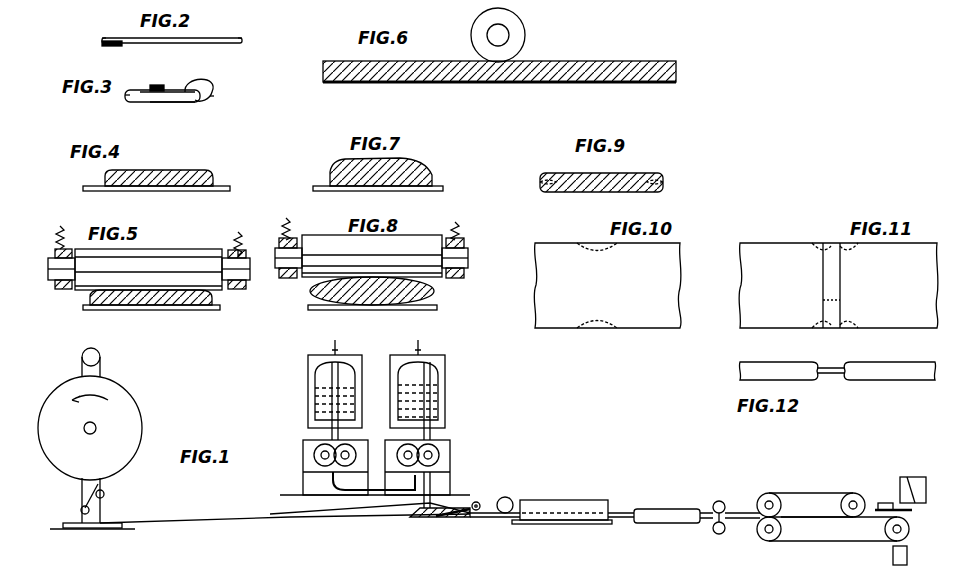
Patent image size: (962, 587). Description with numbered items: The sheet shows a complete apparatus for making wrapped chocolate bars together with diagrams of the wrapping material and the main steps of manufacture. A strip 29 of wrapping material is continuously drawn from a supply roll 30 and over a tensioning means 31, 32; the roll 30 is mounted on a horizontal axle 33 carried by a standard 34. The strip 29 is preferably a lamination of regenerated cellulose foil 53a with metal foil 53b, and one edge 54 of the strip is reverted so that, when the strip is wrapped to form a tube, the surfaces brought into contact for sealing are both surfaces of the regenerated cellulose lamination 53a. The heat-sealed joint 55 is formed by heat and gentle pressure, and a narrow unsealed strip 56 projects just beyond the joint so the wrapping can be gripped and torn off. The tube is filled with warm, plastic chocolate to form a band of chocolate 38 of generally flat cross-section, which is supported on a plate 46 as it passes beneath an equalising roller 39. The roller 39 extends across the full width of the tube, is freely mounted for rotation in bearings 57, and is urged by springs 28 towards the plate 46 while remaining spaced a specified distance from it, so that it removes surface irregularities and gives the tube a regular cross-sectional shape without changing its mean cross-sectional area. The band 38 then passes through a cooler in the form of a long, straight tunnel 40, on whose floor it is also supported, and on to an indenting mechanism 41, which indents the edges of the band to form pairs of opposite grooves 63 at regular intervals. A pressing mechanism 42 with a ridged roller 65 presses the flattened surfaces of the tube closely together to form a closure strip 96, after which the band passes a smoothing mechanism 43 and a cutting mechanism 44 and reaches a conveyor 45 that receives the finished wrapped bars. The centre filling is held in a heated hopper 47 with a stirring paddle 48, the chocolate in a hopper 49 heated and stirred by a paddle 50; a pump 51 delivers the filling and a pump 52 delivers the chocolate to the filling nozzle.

In FIG. 5, the springs 28 is at (60, 226).
In FIG. 8, the springs 28 is at (286, 220).
In FIG. 2, the strip of wrapping material 29 is at (222, 38).
In FIG. 3, the strip of wrapping material 29 is at (214, 90).
In FIG. 1, the strip of wrapping material 29 is at (200, 517).
In FIG. 1, the supply roll 30 is at (143, 424).
In FIG. 1, the tensioning means 31 is at (104, 494).
In FIG. 1, the tensioning means 32 is at (81, 510).
In FIG. 1, the horizontal axle 33 is at (97, 426).
In FIG. 1, the standard 34 is at (101, 362).
In FIG. 6, the band of chocolate 38 is at (602, 61).
In FIG. 4, the band of chocolate 38 is at (195, 170).
In FIG. 7, the band of chocolate 38 is at (428, 166).
In FIG. 9, the band of chocolate 38 is at (645, 173).
In FIG. 5, the band of chocolate 38 is at (150, 305).
In FIG. 8, the band of chocolate 38 is at (382, 309).
In FIG. 10, the band of chocolate 38 is at (742, 252).
In FIG. 11, the band of chocolate 38 is at (838, 285).
In FIG. 12, the band of chocolate 38 is at (898, 362).
In FIG. 1, the band of chocolate 38 is at (520, 505).
In FIG. 6, the equalising roller 39 is at (526, 40).
In FIG. 5, the equalising roller 39 is at (195, 249).
In FIG. 8, the equalising roller 39 is at (371, 256).
In FIG. 1, the equalising roller 39 is at (506, 497).
In FIG. 1, the tunnel cooler 40 is at (573, 503).
In FIG. 1, the indenting mechanism 41 is at (657, 510).
In FIG. 1, the pressing mechanism 42 is at (724, 502).
In FIG. 1, the smoothing mechanism 43 is at (812, 492).
In FIG. 1, the cutting mechanism 44 is at (880, 503).
In FIG. 1, the conveyor 45 is at (907, 548).
In FIG. 6, the plate 46 is at (537, 83).
In FIG. 4, the plate 46 is at (220, 186).
In FIG. 7, the plate 46 is at (445, 188).
In FIG. 5, the plate 46 is at (200, 310).
In FIG. 8, the plate 46 is at (434, 310).
In FIG. 1, the plate 46 is at (512, 524).
In FIG. 1, the hopper 47 is at (446, 392).
In FIG. 1, the stirring paddle 48 is at (438, 365).
In FIG. 1, the hopper 49 is at (308, 366).
In FIG. 1, the paddle 50 is at (345, 365).
In FIG. 1, the pump 51 is at (440, 450).
In FIG. 1, the pump 52 is at (310, 450).
In FIG. 2, the regenerated cellulose foil 53a is at (112, 38).
In FIG. 3, the regenerated cellulose foil 53a is at (132, 102).
In FIG. 2, the metal foil 53b is at (242, 42).
In FIG. 3, the metal foil 53b is at (214, 98).
In FIG. 2, the reverted edge 54 is at (102, 44).
In FIG. 3, the reverted edge 54 is at (178, 102).
In FIG. 3, the heat-sealed joint 55 is at (166, 90).
In FIG. 1, the heat-sealed joint 55 is at (418, 517).
In FIG. 3, the unsealed strip 56 is at (156, 85).
In FIG. 1, the unsealed strip 56 is at (452, 516).
In FIG. 5, the bearings 57 is at (61, 289).
In FIG. 8, the bearings 57 is at (281, 279).
In FIG. 1, the bearings 57 is at (477, 502).
In FIG. 9, the grooves 63 is at (540, 182).
In FIG. 10, the grooves 63 is at (592, 245).
In FIG. 11, the grooves 63 is at (822, 245).
In FIG. 12, the grooves 63 is at (846, 366).
In FIG. 11, the roller 65 is at (822, 328).
In FIG. 11, the closure strip 96 is at (843, 280).